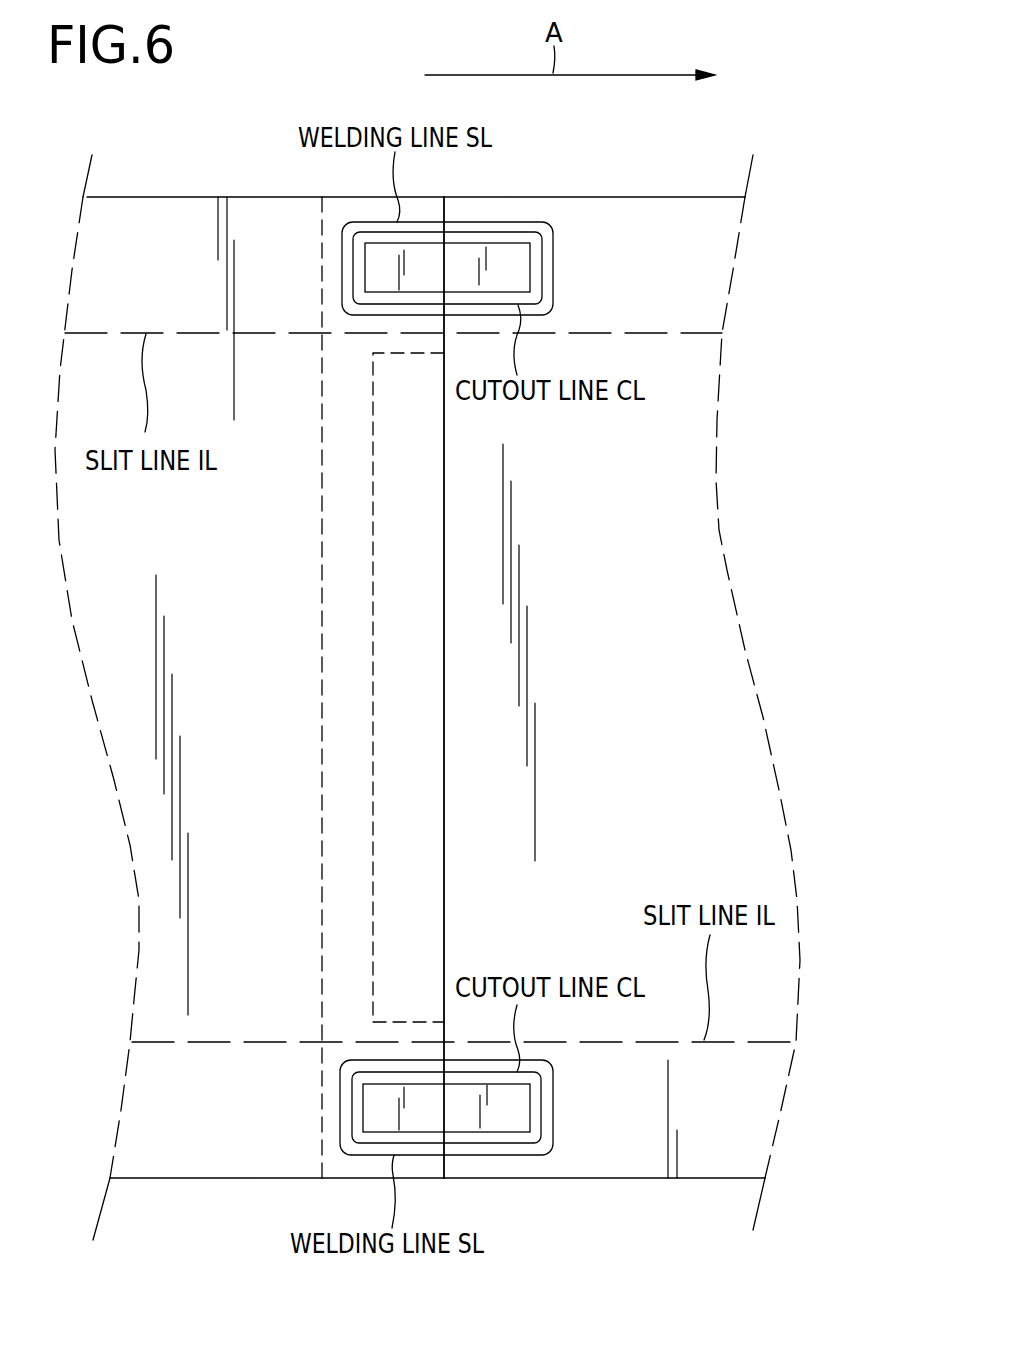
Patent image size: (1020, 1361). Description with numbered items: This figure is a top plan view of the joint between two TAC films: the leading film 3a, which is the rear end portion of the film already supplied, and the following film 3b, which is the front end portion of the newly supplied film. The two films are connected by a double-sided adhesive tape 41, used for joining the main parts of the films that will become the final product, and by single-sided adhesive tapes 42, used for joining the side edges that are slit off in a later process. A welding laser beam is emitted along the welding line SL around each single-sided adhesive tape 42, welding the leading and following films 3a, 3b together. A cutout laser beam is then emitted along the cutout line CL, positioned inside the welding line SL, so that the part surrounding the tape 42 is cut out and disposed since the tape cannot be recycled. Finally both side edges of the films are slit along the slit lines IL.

The leading film 3a is at (700, 531).
The following film 3b is at (167, 226).
The double-sided adhesive tape 41 is at (373, 671).
The single-sided adhesive tape 42 is at (510, 264).